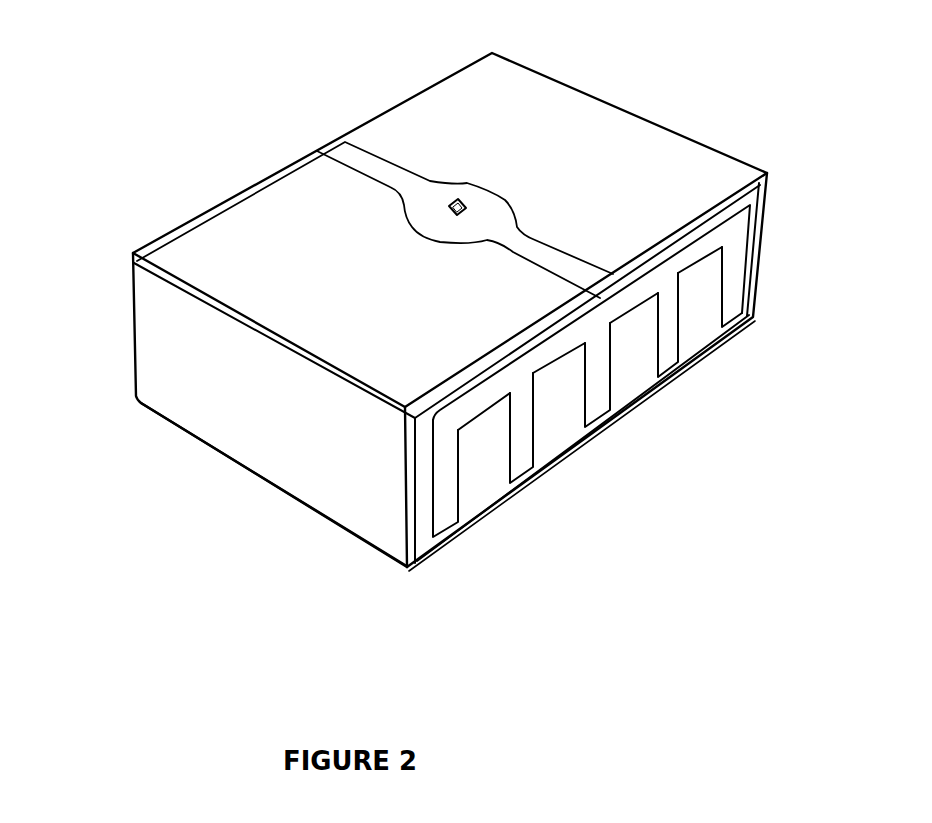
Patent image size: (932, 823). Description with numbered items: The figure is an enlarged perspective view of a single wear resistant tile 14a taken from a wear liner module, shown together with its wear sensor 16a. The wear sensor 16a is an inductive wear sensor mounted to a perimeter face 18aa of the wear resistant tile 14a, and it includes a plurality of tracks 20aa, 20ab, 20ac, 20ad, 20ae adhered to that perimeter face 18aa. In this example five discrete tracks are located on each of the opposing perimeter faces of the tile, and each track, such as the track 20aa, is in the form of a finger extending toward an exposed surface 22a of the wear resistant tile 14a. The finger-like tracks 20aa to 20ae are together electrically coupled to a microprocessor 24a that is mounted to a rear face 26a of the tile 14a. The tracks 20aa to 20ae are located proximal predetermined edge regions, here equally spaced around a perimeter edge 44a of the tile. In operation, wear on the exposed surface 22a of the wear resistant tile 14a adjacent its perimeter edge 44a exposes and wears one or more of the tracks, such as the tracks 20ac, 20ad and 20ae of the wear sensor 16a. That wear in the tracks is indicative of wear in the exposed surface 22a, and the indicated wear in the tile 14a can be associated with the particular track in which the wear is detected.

The wear resistant tile 14a is at (214, 452).
The wear sensor 16a is at (402, 498).
The perimeter face 18aa is at (698, 302).
The track 20aa is at (442, 515).
The track 20ab is at (522, 459).
The track 20ac is at (592, 403).
The track 20ad is at (697, 352).
The track 20ae is at (730, 308).
The exposed surface 22a is at (262, 495).
The microprocessor 24a is at (466, 188).
The rear face 26a is at (588, 150).
The perimeter edge 44a is at (571, 453).